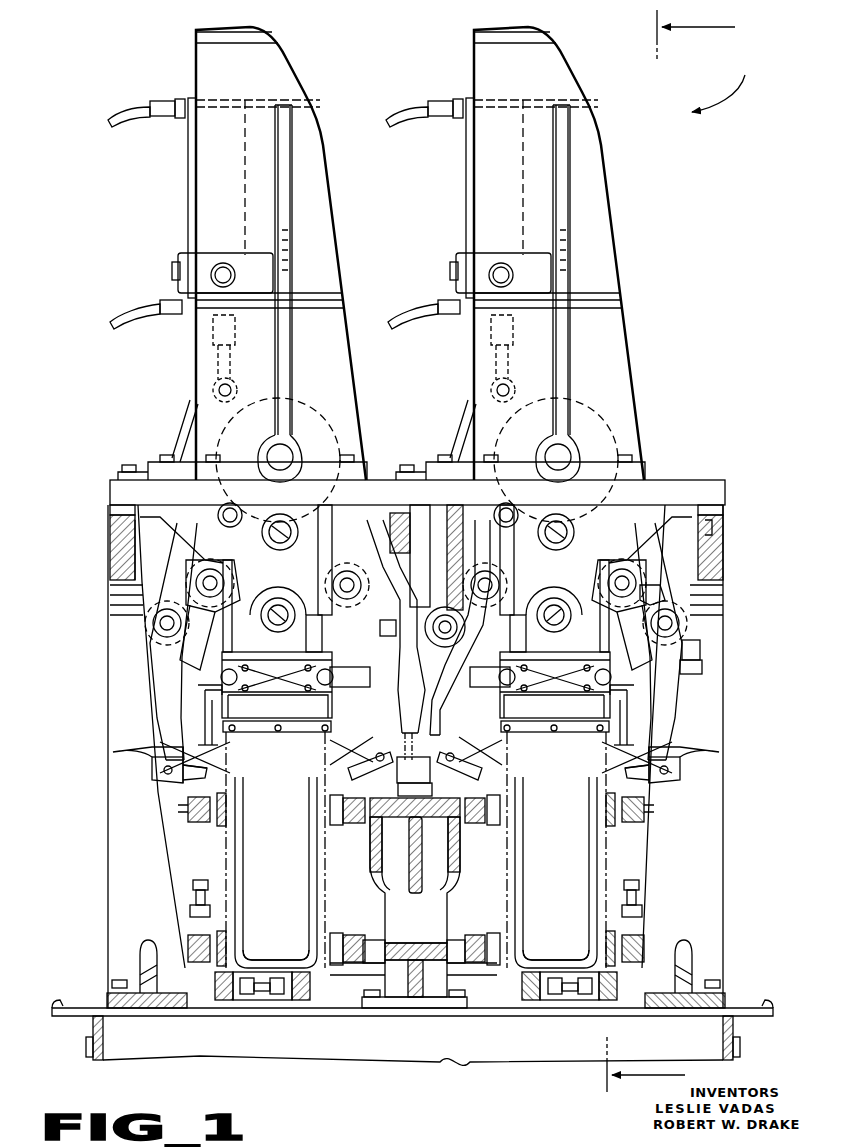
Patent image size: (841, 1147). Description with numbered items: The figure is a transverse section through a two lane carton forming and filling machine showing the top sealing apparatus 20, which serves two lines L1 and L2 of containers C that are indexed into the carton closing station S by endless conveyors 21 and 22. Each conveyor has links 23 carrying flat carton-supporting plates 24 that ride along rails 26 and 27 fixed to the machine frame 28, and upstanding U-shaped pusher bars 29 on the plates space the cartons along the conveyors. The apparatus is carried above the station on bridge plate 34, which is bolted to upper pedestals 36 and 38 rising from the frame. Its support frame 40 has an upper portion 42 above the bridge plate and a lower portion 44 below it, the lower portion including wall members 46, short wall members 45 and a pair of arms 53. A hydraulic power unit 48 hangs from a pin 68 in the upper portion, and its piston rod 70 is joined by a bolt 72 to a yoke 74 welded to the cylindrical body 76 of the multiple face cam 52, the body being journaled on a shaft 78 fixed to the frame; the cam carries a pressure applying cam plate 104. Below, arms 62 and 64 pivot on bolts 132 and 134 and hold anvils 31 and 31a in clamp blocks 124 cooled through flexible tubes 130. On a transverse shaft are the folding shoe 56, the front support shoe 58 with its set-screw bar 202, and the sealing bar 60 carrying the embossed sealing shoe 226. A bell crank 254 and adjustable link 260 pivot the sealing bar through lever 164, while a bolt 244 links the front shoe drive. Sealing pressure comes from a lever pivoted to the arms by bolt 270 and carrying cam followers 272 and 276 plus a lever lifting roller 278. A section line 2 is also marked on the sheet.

The top sealing apparatus 20 is at (729, 78).
The section line 2- 2 is at (660, 552).
The support frame 40 is at (322, 177).
The hydraulic power unit 48 is at (192, 130).
The pin 68 is at (205, 262).
The upper portion 42 is at (345, 304).
The piston rod 70 is at (228, 356).
The yoke 74 is at (232, 378).
The bolt 72 is at (238, 394).
The shaft 78 is at (276, 450).
The cylindrical body 76 is at (330, 438).
The multiple face cam 52 is at (312, 410).
The pressure applying cam plate 104 is at (174, 441).
The bridge plate 34 is at (110, 491).
The cam follower 276 is at (348, 504).
The lever lifting roller 278 is at (456, 515).
The upper pedestal 36 is at (118, 545).
The upper pedestal 38 is at (702, 548).
The lower portion 44 is at (120, 513).
The wall members 46 is at (110, 556).
The short wall members 45 is at (712, 527).
The bolt 132 is at (120, 571).
The bolt 270 is at (153, 621).
The arms 53 is at (150, 640).
The cam follower 272 is at (403, 623).
The bolt 134 is at (330, 586).
The arm 64 is at (330, 562).
The arm 62 is at (145, 656).
The sealing shoe 226 is at (416, 687).
The bar 202 is at (298, 732).
The sealing bar 60 is at (205, 690).
The folding shoe 56 is at (205, 710).
The front support shoe 58 is at (232, 731).
The clamp blocks 124 is at (150, 755).
The flexible tubes 130 is at (150, 771).
The bolt 244 is at (165, 778).
The bell crank 254 is at (690, 590).
The adjustable link 260 is at (700, 650).
The lever 164 is at (702, 668).
The anvil 31 is at (416, 866).
The anvil 31a is at (416, 868).
The line of containers L1 is at (255, 860).
The line of containers L2 is at (580, 857).
The container C is at (228, 874).
The pusher bars 29 is at (235, 890).
The carton-supporting plates 24 is at (277, 968).
The carton closing station S is at (620, 792).
The rail 26 is at (236, 1000).
The links 23 is at (262, 1000).
The rail 27 is at (500, 1002).
The endless conveyor 21 is at (264, 1000).
The frame 28 is at (130, 1062).
The endless conveyor 22 is at (578, 1001).